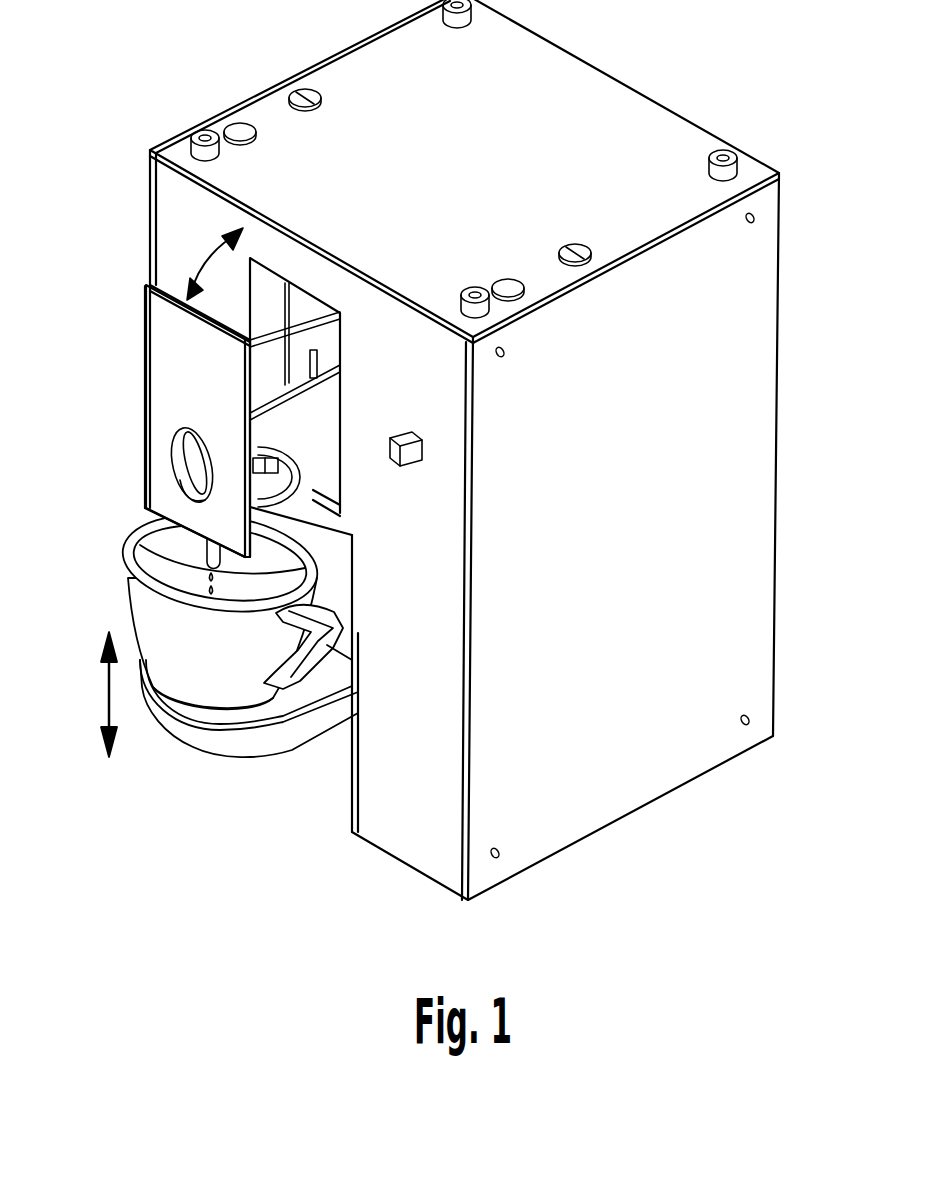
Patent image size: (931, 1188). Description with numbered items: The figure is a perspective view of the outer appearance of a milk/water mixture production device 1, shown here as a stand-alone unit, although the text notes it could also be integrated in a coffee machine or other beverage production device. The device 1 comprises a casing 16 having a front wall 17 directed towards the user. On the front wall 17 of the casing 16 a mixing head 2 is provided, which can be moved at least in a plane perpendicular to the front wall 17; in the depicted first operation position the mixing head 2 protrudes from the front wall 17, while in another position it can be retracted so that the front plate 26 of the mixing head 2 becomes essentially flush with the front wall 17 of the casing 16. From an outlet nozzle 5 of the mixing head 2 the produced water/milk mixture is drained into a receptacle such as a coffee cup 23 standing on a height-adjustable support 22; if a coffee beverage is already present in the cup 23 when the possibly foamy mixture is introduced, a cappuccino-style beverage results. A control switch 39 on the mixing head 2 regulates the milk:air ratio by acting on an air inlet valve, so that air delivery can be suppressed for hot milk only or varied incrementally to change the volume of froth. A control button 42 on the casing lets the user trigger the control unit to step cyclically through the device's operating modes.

The milk/water mixture production device 1 is at (452, 450).
The mixing head 2 is at (194, 492).
The outlet nozzle 5 is at (207, 557).
The casing 16 is at (777, 328).
The front wall 17 is at (148, 198).
The height-adjustable support 22 is at (190, 742).
The coffee cup 23 is at (125, 590).
The front plate 26 is at (157, 317).
The control switch 39 is at (175, 465).
The control button 42 is at (422, 448).